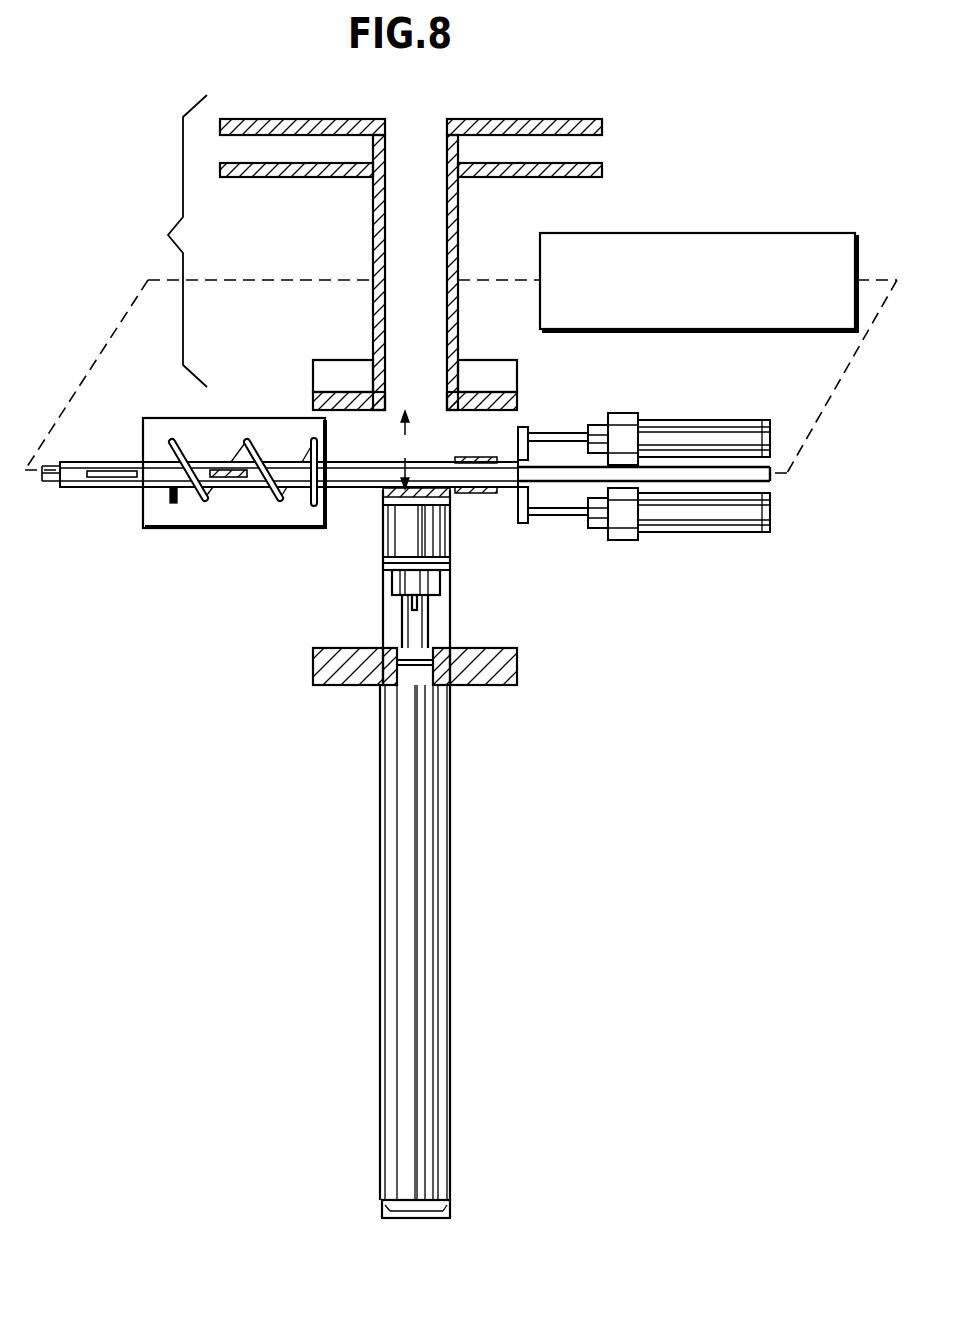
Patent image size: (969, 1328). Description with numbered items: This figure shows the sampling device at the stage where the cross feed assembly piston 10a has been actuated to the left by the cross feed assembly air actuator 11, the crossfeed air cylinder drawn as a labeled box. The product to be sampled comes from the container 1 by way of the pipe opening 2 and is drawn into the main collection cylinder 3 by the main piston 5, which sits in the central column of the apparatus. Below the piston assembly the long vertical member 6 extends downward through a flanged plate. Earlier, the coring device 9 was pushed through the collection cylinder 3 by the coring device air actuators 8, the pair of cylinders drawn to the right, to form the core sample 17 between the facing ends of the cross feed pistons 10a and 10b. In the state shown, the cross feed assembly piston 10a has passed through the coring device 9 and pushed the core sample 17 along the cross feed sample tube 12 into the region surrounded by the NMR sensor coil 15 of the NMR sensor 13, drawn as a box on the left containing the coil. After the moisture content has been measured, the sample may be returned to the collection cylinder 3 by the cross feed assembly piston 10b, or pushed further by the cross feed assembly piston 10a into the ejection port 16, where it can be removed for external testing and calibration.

The container 1 is at (535, 119).
The pipe opening 2 is at (176, 241).
The collection cylinder 3 is at (403, 450).
The main piston 5 is at (398, 527).
The spindle shaft 6 is at (450, 798).
The coring device air actuator 8 is at (712, 420).
The coring device 9 is at (452, 505).
The cross feed assembly piston 10a is at (747, 475).
The cross feed assembly piston 10b is at (53, 484).
The cross feed assembly air actuator 11 is at (727, 233).
The cross feed sample tube 12 is at (360, 462).
The NMR sensor 13 is at (248, 530).
The NMR sensor coil 15 is at (180, 442).
The ejection port 16 is at (108, 470).
The core sample 17 is at (220, 468).